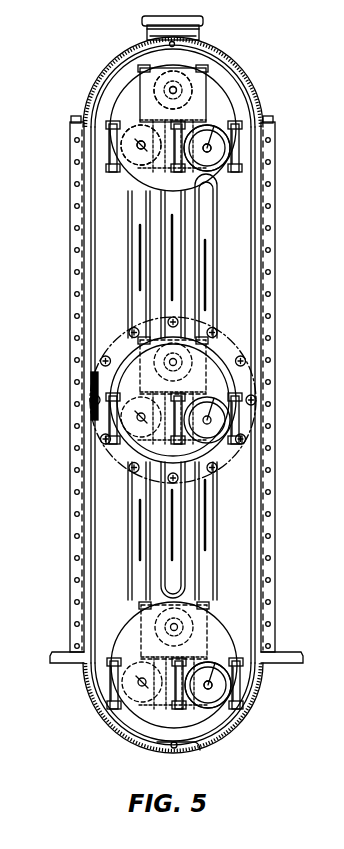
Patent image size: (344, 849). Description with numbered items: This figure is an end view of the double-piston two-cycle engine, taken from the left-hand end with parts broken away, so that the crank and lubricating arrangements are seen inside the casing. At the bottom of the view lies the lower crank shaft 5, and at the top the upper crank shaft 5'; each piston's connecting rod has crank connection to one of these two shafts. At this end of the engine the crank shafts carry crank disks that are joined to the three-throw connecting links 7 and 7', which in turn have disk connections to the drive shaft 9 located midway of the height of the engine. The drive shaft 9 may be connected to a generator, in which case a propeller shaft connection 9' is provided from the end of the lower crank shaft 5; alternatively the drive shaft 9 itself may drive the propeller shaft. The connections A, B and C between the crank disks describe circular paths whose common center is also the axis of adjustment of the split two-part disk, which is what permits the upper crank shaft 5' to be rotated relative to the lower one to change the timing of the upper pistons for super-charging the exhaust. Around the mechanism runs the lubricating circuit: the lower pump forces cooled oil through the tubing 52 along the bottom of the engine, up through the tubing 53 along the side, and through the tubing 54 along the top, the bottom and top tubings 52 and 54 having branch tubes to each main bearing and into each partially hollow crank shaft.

The tubing 54 is at (176, 46).
The connection A is at (217, 79).
The connection B is at (244, 133).
The upper crank shaft 5' is at (144, 128).
The connection C is at (100, 153).
The three-throw connecting link 7' is at (175, 256).
The drive shaft 9 is at (195, 400).
The tubing 53 is at (92, 546).
The three-throw connecting link 7 is at (180, 531).
The propeller shaft connection 9' is at (174, 663).
The lower crank shaft 5 is at (218, 666).
The tubing 52 is at (199, 750).